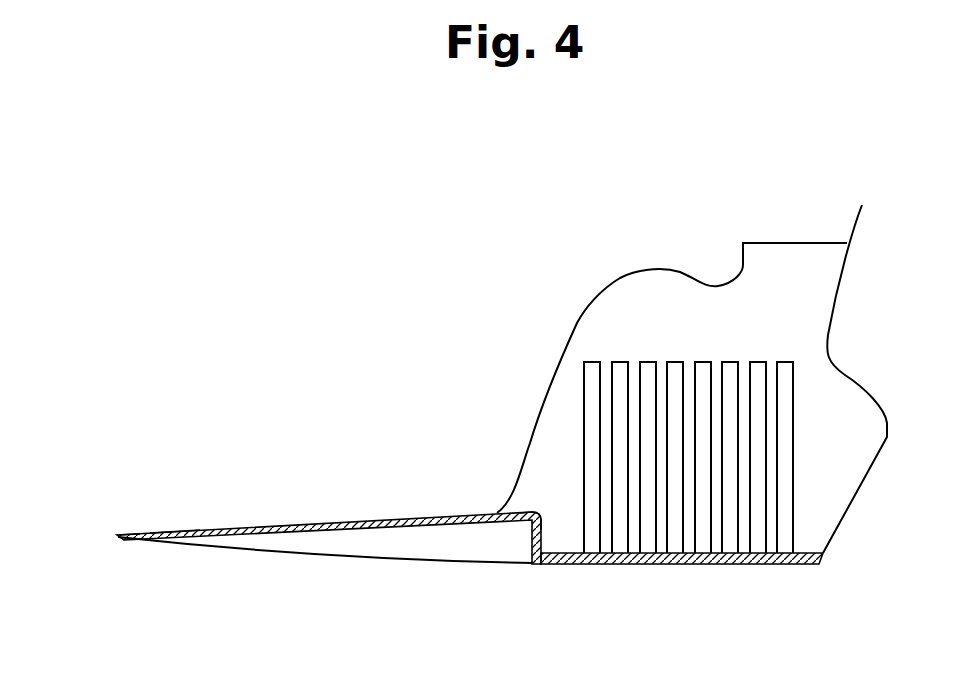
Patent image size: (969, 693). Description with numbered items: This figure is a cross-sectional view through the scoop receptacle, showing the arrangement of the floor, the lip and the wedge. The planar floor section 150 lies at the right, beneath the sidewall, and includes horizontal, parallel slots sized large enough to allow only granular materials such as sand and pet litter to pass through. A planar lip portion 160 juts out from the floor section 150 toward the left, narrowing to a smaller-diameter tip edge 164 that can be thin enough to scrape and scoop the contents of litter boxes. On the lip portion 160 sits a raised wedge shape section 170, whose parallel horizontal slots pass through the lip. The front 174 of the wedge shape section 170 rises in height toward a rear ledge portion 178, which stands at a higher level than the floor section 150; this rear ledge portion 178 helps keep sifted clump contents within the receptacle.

The floor section 150 is at (587, 566).
The lip portion 160 is at (405, 560).
The tip edge 164 is at (119, 536).
The wedge shape section 170 is at (310, 525).
The front of the wedge 174 is at (170, 534).
The rear ledge portion 178 is at (537, 515).